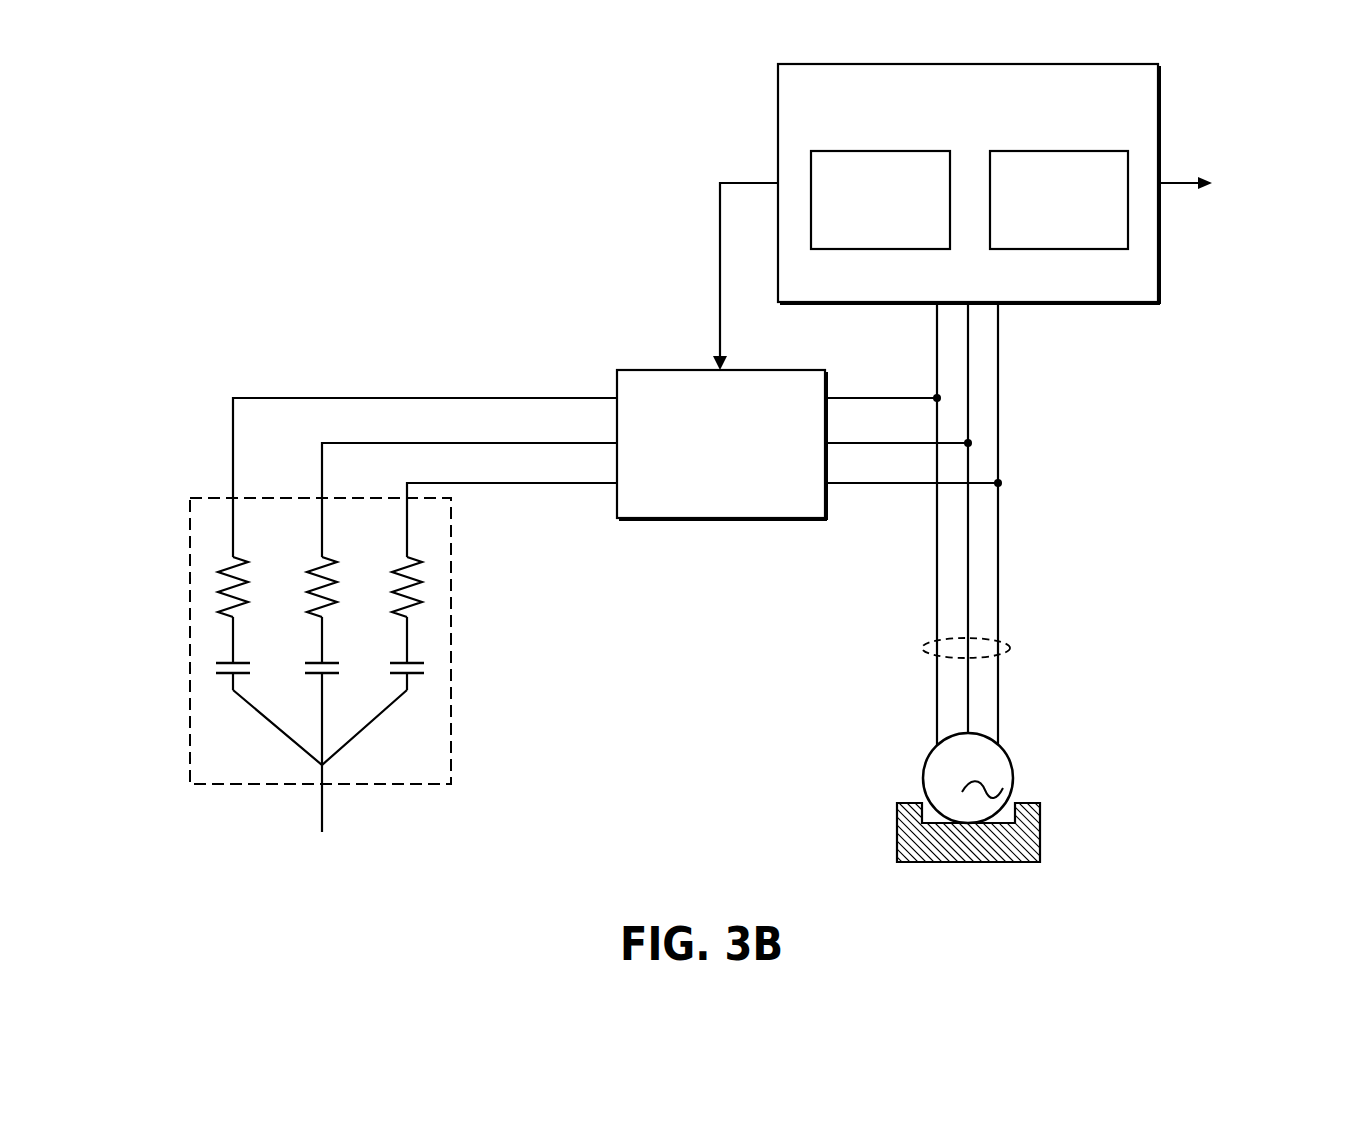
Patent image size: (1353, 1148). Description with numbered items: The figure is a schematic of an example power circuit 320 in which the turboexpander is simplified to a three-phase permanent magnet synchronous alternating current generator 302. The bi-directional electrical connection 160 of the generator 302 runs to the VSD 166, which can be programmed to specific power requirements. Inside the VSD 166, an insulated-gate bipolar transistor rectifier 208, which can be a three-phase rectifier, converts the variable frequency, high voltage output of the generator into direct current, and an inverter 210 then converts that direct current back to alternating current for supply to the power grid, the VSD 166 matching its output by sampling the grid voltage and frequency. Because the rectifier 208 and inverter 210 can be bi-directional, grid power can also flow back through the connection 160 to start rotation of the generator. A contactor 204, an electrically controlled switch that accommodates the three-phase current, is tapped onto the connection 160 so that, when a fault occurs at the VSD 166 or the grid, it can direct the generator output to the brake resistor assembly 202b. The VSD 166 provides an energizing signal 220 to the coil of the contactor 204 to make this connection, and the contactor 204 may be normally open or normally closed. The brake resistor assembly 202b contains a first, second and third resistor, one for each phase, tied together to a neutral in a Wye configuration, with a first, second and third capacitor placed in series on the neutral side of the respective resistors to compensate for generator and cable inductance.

The power circuit 320 is at (702, 458).
The VSD 166 is at (839, 113).
The rectifier 208 is at (903, 218).
The inverter 210 is at (1082, 218).
The energizing signal 220 is at (720, 277).
The contactor 204 is at (745, 460).
The brake resistor assembly 202b is at (452, 579).
The bi-directional electrical connection 160 is at (1010, 646).
The electric generator 302 is at (1053, 731).